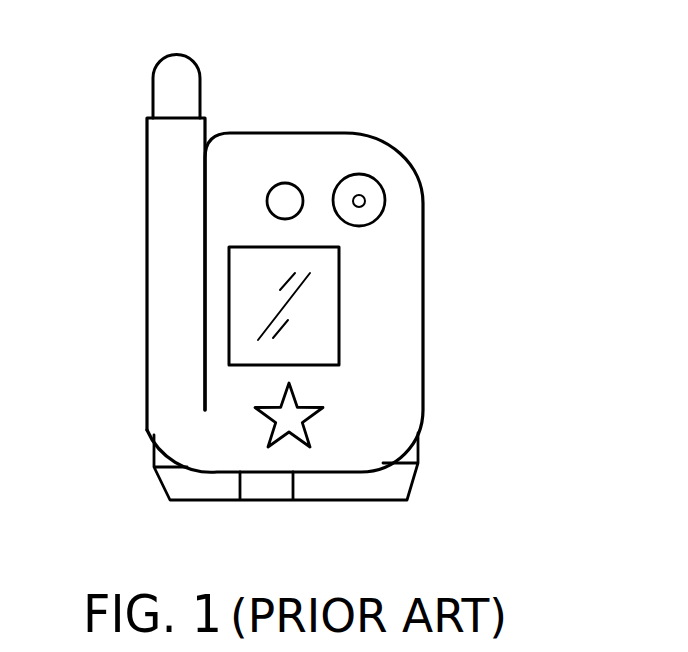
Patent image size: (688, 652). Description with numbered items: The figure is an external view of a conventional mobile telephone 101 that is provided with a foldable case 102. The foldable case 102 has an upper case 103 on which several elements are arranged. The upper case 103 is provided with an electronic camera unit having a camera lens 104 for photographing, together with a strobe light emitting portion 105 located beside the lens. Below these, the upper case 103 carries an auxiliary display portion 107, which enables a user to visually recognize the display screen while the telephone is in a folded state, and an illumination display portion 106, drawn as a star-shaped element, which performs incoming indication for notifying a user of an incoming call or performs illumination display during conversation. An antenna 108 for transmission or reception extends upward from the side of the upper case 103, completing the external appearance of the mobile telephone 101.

The mobile telephone 101 is at (412, 29).
The foldable case 102 is at (438, 303).
The upper case 103 is at (403, 237).
The camera lens 104 is at (362, 199).
The strobe light emitting portion 105 is at (284, 196).
The illumination display portion 106 is at (296, 428).
The auxiliary display portion 107 is at (327, 340).
The antenna 108 is at (165, 90).